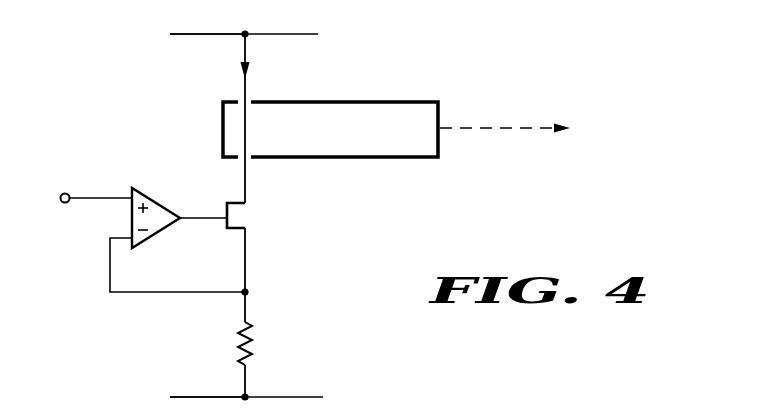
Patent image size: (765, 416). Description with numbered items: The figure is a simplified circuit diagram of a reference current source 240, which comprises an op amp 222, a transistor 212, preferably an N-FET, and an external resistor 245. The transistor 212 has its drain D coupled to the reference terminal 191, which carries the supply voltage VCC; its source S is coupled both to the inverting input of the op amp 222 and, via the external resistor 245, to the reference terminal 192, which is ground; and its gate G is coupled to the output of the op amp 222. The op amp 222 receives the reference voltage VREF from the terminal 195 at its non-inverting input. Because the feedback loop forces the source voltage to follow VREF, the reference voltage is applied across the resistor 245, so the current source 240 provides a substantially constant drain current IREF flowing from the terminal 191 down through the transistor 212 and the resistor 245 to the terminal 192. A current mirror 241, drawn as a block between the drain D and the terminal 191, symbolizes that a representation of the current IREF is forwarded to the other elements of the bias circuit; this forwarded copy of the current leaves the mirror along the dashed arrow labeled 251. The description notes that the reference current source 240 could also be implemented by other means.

The reference terminal 191 is at (190, 35).
The reference terminal 192 is at (197, 396).
The terminal 195 is at (67, 192).
The transistor 212 is at (248, 217).
The op amp 222 is at (162, 198).
The reference current source 240 is at (521, 242).
The current mirror 241 is at (425, 100).
The external resistor 245 is at (256, 341).
The output current 251 is at (537, 126).